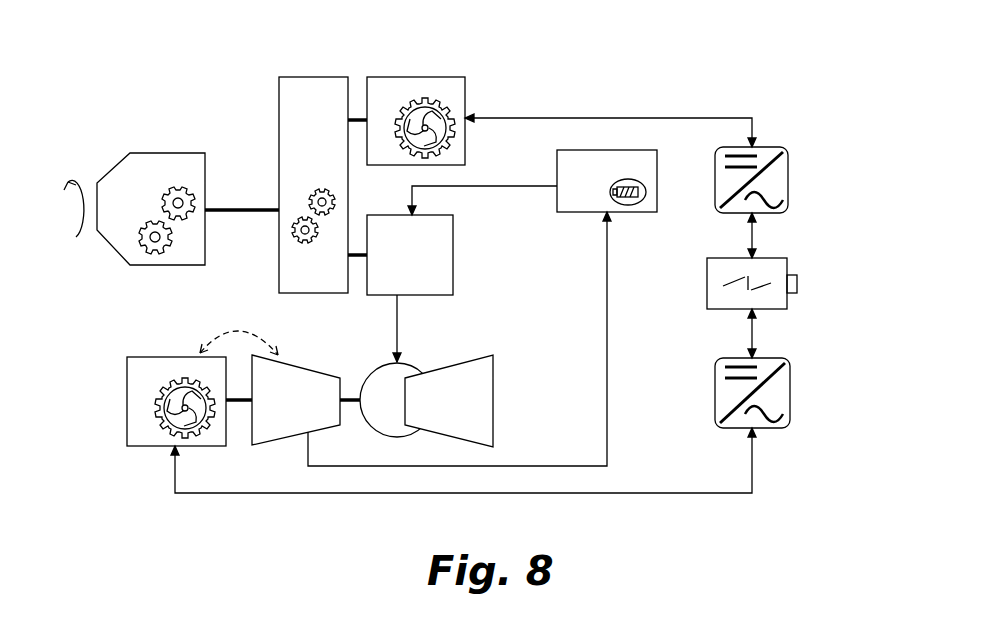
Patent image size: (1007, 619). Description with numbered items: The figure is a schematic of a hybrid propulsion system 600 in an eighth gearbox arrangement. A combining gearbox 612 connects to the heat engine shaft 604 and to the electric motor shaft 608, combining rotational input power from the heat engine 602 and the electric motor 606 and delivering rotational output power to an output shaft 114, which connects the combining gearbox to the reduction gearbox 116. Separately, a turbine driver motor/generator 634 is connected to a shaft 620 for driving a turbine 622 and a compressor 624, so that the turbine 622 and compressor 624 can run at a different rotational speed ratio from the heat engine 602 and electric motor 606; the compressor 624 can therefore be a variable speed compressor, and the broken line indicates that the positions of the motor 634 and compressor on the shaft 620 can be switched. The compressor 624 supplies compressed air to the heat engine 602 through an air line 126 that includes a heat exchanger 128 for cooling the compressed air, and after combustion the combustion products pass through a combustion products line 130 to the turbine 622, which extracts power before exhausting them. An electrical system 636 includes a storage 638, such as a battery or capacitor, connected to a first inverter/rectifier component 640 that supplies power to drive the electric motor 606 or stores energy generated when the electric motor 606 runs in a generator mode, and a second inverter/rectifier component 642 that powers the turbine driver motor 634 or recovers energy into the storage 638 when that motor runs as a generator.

The system 600 is at (148, 29).
The reduction gearbox 116 is at (165, 153).
The output shaft 114 is at (238, 206).
The combining gearbox 612 is at (279, 234).
The electric motor shaft 608 is at (358, 117).
The electric motor 606 is at (465, 87).
The heat engine shaft 604 is at (353, 253).
The heat engine 602 is at (455, 250).
The combustion products line 130 is at (399, 311).
The heat exchanger 128 is at (631, 212).
The air line 126 is at (606, 305).
The electrical system 636 is at (740, 93).
The first inverter/rectifier component 640 is at (790, 180).
The storage 638 is at (790, 265).
The second inverter/rectifier component 642 is at (790, 385).
The compressor 624 is at (305, 367).
The shaft 620 is at (237, 403).
The turbine 622 is at (494, 395).
The turbine driver motor/generator 634 is at (160, 446).